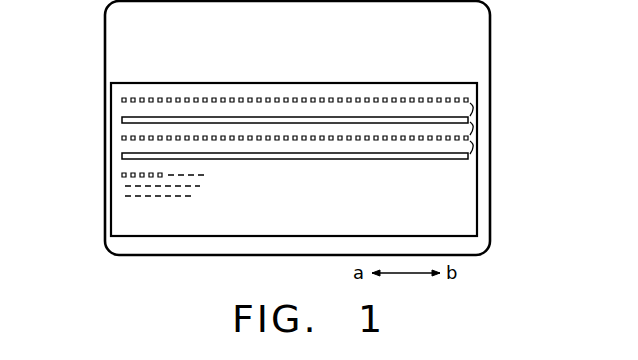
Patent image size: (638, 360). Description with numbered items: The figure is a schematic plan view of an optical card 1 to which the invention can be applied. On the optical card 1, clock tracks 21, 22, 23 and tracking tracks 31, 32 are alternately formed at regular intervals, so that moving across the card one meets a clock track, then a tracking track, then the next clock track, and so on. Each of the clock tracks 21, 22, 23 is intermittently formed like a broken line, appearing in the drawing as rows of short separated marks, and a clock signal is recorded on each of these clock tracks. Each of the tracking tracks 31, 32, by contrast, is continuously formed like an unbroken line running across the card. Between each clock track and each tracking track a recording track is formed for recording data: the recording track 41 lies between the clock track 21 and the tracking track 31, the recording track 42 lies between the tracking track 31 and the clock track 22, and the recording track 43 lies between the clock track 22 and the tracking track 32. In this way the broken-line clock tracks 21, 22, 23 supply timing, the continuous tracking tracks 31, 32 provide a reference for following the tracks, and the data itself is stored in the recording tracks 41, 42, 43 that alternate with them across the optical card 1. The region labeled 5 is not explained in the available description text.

The optical card 1 is at (480, 43).
The inner frame / insulating housing 5 is at (465, 203).
The clock track 21 is at (122, 100).
The clock track 22 is at (122, 138).
The clock track 23 is at (122, 176).
The tracking track 31 is at (122, 119).
The tracking track 32 is at (122, 157).
The recording track 41 is at (473, 109).
The recording track 42 is at (473, 130).
The recording track 43 is at (473, 150).